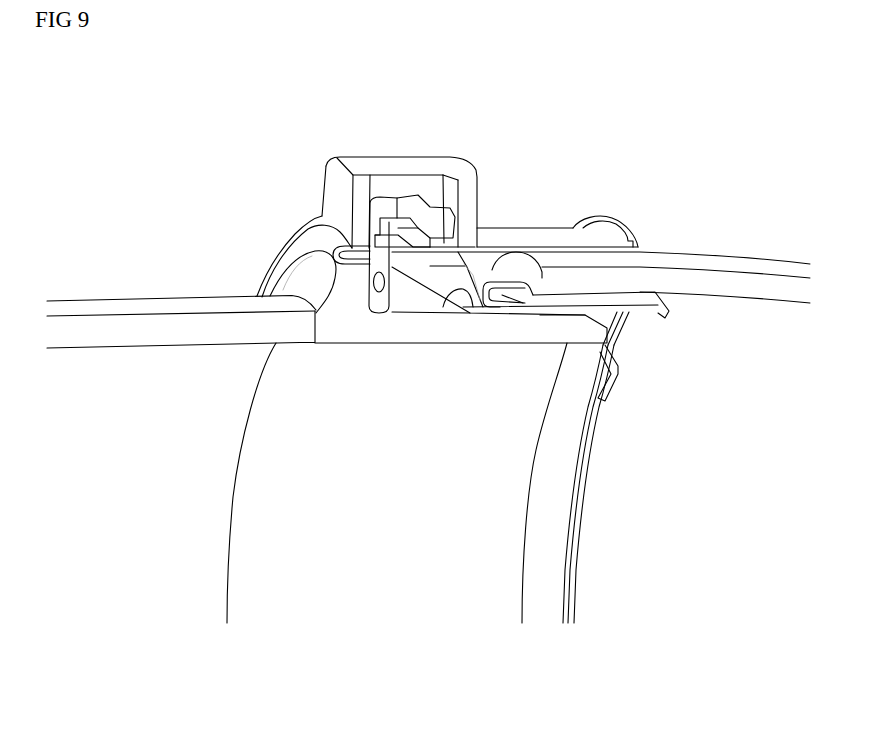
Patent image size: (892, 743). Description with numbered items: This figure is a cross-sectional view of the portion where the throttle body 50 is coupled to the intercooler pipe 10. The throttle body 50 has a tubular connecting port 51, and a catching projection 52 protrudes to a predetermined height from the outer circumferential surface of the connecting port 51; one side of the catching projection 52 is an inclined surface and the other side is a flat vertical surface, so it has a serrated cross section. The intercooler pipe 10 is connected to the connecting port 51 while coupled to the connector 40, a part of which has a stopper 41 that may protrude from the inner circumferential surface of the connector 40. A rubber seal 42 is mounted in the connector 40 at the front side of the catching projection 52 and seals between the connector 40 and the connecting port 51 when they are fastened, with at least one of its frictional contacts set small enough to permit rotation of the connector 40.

The intercooler pipe 10 is at (738, 283).
The connector 40 is at (520, 228).
The stopper 41 is at (384, 207).
The rubber seal 42 is at (502, 300).
The throttle body 50 is at (175, 323).
The connecting port 51 is at (567, 345).
The catching projection 52 is at (408, 302).